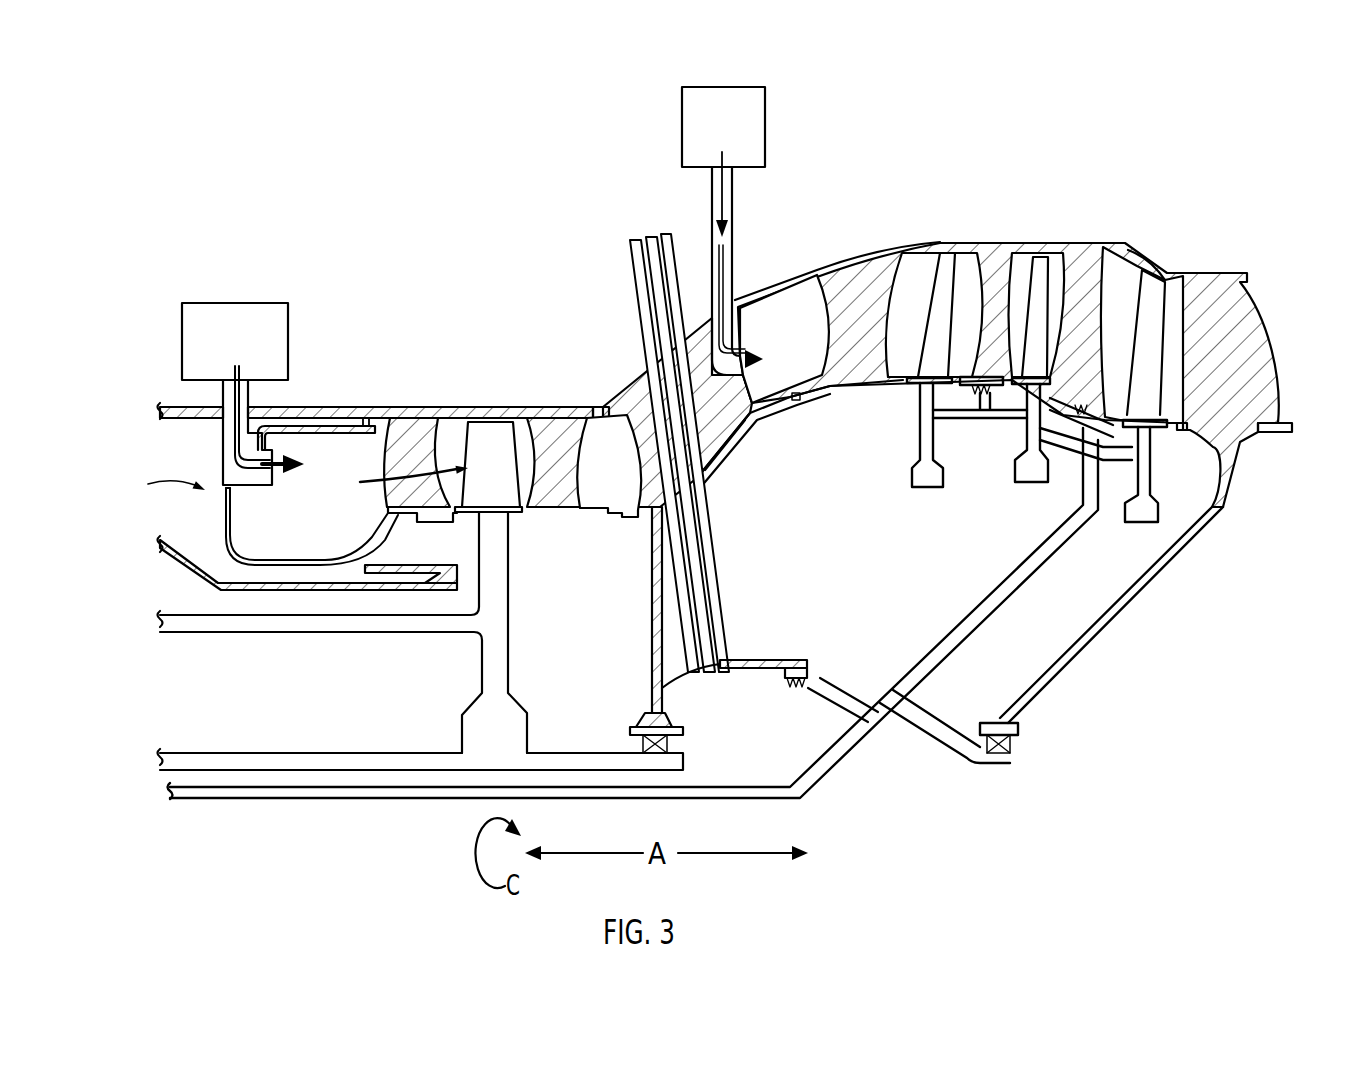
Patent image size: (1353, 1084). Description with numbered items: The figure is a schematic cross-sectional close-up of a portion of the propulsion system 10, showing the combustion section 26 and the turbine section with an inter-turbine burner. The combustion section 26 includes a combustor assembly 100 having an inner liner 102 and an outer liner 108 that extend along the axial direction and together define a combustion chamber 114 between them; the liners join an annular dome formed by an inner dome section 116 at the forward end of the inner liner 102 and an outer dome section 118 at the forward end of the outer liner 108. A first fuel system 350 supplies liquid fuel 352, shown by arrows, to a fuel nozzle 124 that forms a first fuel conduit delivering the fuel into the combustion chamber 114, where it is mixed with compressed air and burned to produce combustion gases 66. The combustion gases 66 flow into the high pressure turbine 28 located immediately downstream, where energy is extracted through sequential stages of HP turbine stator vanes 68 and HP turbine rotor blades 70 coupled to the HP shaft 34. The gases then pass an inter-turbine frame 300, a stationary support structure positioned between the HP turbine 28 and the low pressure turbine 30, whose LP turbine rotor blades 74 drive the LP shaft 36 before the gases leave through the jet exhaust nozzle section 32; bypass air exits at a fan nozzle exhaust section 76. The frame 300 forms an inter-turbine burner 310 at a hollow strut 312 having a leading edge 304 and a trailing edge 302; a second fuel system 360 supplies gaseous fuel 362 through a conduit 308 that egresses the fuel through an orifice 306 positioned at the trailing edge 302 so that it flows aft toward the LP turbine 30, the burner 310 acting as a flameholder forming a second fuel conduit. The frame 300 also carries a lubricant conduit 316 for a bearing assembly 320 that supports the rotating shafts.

The propulsion system 10 is at (968, 84).
The combustion section 26 is at (345, 383).
The high pressure (HP) turbine 28 is at (533, 600).
The low pressure (LP) turbine 30 is at (945, 528).
The jet exhaust nozzle section 32 is at (1240, 224).
The high pressure (HP) shaft 34 is at (255, 757).
The low pressure (LP) shaft 36 is at (297, 798).
The combustion gases 66 is at (392, 437).
The HP turbine stator vanes 68 is at (553, 432).
The HP turbine rotor blades 70 is at (492, 440).
The LP turbine rotor blades 74 is at (945, 277).
The fan nozzle exhaust section 76 is at (1005, 262).
The combustor assembly 100 is at (158, 486).
The inner liner 102 is at (274, 558).
The outer liner 108 is at (288, 436).
The combustion chamber 114 is at (344, 509).
The inner dome section 116 is at (227, 530).
The outer dome section 118 is at (250, 436).
The fuel nozzle 124 is at (243, 487).
The inter-turbine frame 300 is at (622, 343).
The trailing edge 302 is at (767, 393).
The leading edge 304 is at (628, 484).
The orifice 306 is at (757, 343).
The conduit 308 is at (733, 278).
The inter-turbine burner 310 is at (693, 306).
The strut 312 is at (723, 432).
The lubricant conduit 316 is at (636, 303).
The bearing assembly 320 is at (619, 711).
The first fuel system 350 is at (254, 348).
The liquid fuel 352 is at (237, 394).
The second fuel system 360 is at (743, 131).
The gaseous fuel 362 is at (723, 193).